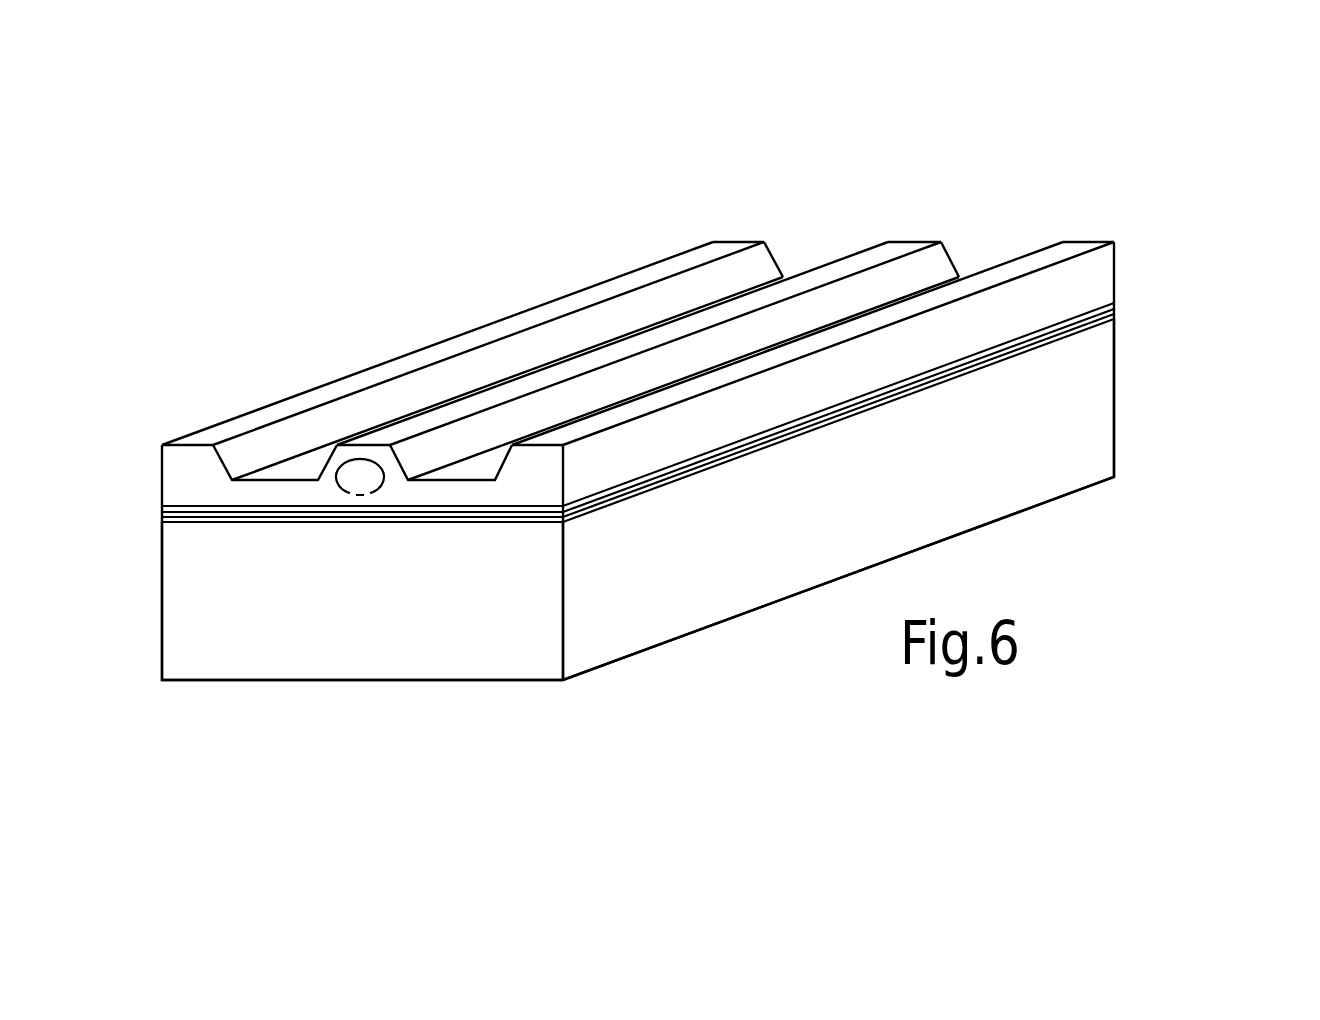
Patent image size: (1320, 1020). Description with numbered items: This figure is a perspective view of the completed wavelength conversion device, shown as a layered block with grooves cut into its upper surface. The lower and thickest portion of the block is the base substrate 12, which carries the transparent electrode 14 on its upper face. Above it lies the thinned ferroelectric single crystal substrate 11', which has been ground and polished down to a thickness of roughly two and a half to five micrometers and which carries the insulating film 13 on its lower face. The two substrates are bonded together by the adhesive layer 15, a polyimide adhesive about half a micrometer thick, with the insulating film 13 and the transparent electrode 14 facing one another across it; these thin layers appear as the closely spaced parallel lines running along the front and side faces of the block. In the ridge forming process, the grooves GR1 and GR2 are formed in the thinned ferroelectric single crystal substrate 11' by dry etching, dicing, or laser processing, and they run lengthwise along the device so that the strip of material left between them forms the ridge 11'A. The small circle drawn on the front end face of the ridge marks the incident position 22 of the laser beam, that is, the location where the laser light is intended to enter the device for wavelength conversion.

The thinned ferroelectric single crystal substrate 11' is at (731, 408).
The ridge 11'A is at (638, 340).
The base substrate 12 is at (1088, 427).
The insulating film 13 is at (1112, 300).
The transparent electrode 14 is at (1113, 322).
The adhesive layer 15 is at (1113, 312).
The incident position of laser beam 22 is at (357, 478).
The groove GR1 is at (967, 270).
The groove GR2 is at (797, 265).